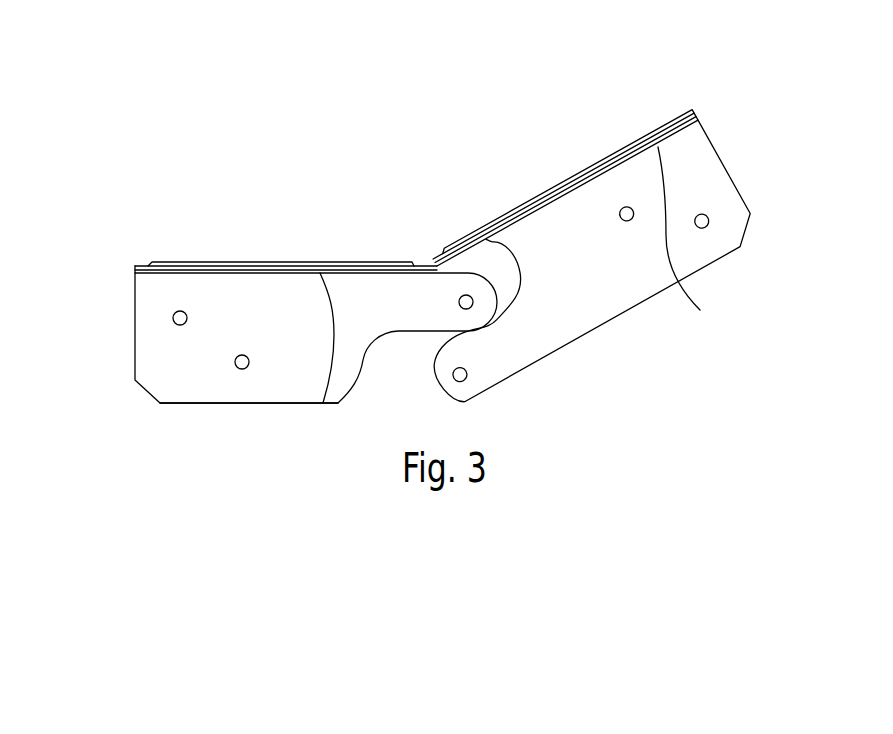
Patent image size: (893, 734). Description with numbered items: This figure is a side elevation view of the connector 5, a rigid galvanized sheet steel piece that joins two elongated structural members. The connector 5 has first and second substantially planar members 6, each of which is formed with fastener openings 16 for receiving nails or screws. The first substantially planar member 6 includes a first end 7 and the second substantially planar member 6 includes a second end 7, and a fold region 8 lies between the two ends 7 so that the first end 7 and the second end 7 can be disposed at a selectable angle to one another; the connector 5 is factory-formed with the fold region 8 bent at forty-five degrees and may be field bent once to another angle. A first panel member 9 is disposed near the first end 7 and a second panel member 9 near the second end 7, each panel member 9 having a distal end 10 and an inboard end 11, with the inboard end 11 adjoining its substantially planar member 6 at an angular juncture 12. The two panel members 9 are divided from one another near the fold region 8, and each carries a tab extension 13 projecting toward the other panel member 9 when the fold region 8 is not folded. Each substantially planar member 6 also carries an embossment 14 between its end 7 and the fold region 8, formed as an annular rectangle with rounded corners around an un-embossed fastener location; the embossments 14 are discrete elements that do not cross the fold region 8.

The connector 5 is at (158, 407).
The substantially planar member 6 is at (140, 260).
The end 7 is at (133, 268).
The fold region 8 is at (434, 265).
The panel member 9 is at (229, 411).
The distal end 10 is at (292, 403).
The inboard end 11 is at (323, 403).
The angular juncture 12 is at (222, 270).
The tab extension 13 is at (413, 297).
The embossment 14 is at (152, 263).
The fastener opening 16 is at (185, 325).